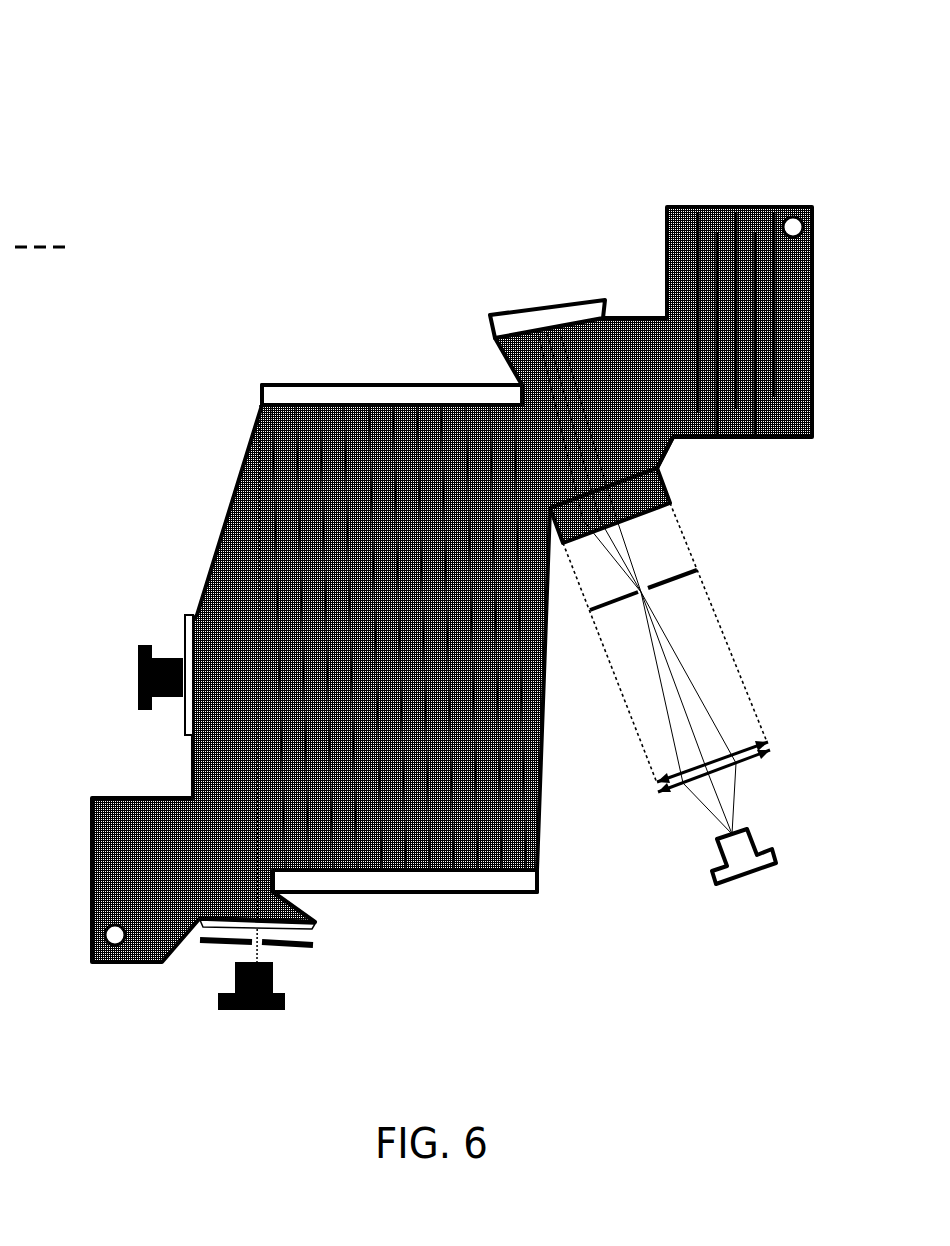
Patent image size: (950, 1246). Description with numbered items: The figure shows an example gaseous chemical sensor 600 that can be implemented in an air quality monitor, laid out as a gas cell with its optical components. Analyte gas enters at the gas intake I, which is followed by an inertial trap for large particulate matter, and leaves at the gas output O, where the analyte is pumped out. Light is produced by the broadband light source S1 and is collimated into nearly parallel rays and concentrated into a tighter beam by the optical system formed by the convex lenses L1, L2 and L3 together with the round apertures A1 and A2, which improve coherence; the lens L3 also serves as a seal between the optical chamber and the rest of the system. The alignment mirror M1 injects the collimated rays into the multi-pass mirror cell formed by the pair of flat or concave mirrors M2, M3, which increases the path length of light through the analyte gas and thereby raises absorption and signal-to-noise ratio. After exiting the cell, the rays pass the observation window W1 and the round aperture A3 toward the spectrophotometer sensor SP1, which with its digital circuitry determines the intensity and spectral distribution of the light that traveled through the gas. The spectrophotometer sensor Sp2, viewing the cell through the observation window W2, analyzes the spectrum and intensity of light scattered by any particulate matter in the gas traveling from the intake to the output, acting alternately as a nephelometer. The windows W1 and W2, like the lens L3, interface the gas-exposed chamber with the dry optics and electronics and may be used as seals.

The gaseous chemical sensor 600 is at (107, 117).
The gas intake I is at (750, 304).
The alignment mirror M1 is at (547, 300).
The flat or concave mirror M2 is at (392, 371).
The flat or concave mirror M3 is at (405, 899).
The observation window W2 is at (215, 675).
The spectrophotometer sensor Sp2 is at (121, 677).
The gas output O is at (82, 939).
The observation window W1 is at (287, 934).
The round aperture A3 is at (272, 966).
The spectrophotometer sensor SP1 is at (291, 997).
The round aperture A2 is at (642, 449).
The convex lens L3 is at (637, 505).
The round aperture A1 is at (665, 643).
The convex lens L2 is at (746, 746).
The convex lens L1 is at (745, 769).
The broadband light source S1 is at (781, 855).